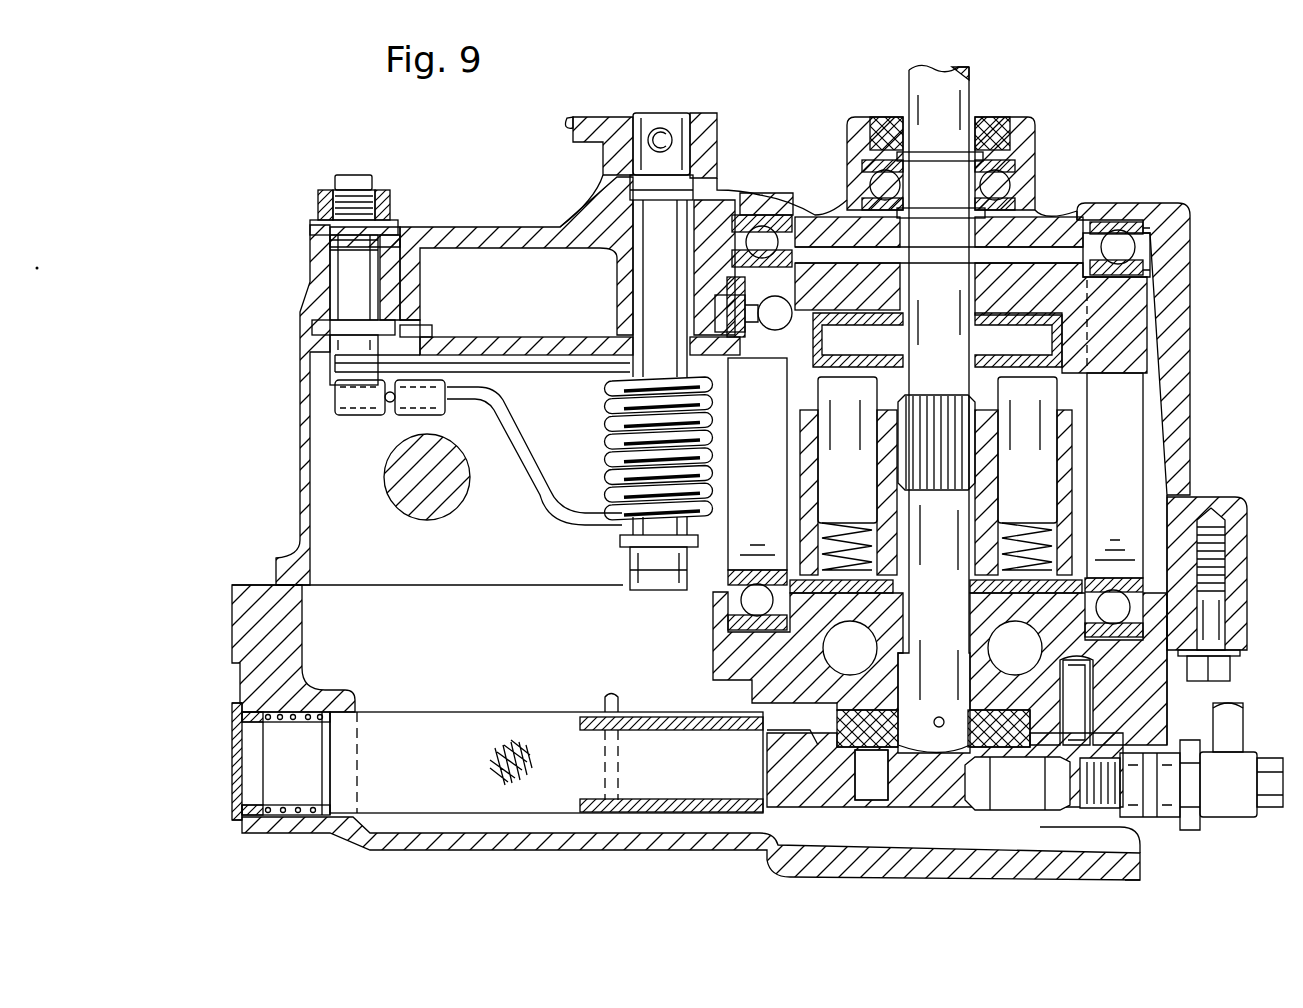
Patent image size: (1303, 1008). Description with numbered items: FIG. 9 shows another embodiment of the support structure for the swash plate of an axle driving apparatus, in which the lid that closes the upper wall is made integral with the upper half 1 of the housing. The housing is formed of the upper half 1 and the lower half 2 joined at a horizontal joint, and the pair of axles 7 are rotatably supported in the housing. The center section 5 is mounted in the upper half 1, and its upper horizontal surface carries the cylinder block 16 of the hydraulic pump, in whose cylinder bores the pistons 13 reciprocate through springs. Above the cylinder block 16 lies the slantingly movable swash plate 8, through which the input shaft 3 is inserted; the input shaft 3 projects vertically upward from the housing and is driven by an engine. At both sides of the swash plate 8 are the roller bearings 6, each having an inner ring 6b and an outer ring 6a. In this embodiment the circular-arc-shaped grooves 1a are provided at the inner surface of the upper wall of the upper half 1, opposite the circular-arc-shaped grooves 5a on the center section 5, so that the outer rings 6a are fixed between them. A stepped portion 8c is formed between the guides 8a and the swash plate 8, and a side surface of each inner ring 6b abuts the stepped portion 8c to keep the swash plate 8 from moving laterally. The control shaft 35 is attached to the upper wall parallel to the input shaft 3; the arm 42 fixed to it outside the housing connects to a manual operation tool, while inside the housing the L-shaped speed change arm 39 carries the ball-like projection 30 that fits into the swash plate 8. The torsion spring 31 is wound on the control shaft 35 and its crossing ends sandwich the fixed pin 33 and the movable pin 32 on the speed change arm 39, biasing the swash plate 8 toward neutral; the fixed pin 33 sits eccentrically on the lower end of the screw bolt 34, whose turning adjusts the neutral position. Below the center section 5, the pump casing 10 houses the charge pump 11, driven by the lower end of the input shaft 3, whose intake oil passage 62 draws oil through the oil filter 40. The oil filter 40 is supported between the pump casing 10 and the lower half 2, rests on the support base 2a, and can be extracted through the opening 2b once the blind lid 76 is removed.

The upper half 1 is at (293, 508).
The circular-arc-shaped grooves 1a is at (762, 214).
The lower half 2 is at (232, 615).
The support base 2a is at (637, 693).
The opening 2b is at (283, 800).
The input shaft 3 is at (969, 88).
The center section 5 is at (713, 680).
The circular-arc-shaped grooves 5a is at (1123, 640).
The roller bearings 6 is at (1148, 405).
The outer ring 6a is at (1162, 203).
The inner ring 6b is at (1150, 262).
The axles 7 is at (440, 503).
The swash plate 8 is at (1013, 216).
The guides 8a is at (1215, 338).
The stepped portion 8c is at (1010, 293).
The pump casing 10 is at (913, 813).
The charge pump 11 is at (980, 742).
The pistons 13 is at (854, 513).
The cylinder block 16 is at (1075, 480).
The projection 30 is at (772, 333).
The torsion spring 31 is at (540, 512).
The movable pin 32 is at (407, 420).
The fixed pin 33 is at (353, 420).
The screw bolt 34 is at (347, 273).
The control shaft 35 is at (660, 113).
The speed change arm 39 is at (530, 335).
The oil filter 40 is at (440, 712).
The arm 42 is at (575, 122).
The intake oil passage 62 is at (868, 790).
The blind lid 76 is at (232, 747).